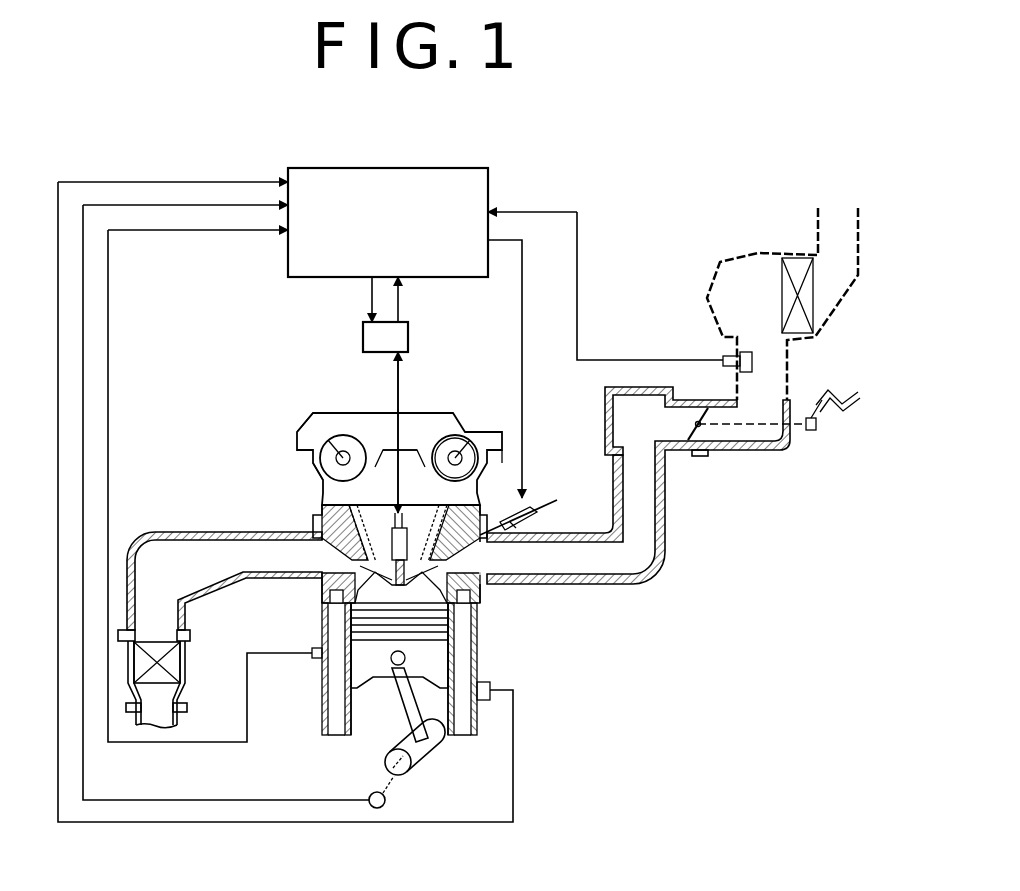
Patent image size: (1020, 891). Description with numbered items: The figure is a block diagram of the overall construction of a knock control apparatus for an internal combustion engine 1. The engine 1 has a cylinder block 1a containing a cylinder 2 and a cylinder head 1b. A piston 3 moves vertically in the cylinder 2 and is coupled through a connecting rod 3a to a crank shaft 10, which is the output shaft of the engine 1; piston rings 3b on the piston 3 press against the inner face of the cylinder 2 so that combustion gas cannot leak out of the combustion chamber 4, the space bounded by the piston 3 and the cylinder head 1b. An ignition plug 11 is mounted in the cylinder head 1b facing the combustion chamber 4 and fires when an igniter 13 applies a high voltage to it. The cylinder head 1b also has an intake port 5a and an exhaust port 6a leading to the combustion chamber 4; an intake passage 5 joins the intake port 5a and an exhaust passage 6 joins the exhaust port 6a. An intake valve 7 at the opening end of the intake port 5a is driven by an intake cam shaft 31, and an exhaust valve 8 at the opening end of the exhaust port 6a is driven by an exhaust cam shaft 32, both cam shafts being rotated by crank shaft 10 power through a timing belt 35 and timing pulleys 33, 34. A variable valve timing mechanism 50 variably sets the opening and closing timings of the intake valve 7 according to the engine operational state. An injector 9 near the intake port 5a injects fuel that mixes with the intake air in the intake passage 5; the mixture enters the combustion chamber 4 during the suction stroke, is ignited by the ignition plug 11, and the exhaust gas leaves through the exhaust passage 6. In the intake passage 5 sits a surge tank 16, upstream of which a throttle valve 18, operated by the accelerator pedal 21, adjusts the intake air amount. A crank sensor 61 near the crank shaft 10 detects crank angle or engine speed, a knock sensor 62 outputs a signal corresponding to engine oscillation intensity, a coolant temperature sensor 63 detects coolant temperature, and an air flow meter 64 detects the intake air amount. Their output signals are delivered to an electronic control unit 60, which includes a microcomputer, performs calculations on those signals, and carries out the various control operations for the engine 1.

The internal combustion engine 1 is at (492, 664).
The cylinder block 1a is at (322, 716).
The cylinder head 1b is at (312, 519).
The cylinder 2 is at (342, 740).
The piston 3 is at (396, 680).
The connecting rod 3a is at (412, 720).
The piston rings 3b is at (455, 619).
The combustion chamber 4 is at (345, 605).
The intake passage 5 is at (668, 532).
The intake port 5a is at (472, 548).
The exhaust passage 6 is at (242, 582).
The exhaust port 6a is at (332, 542).
The intake valve 7 is at (440, 574).
The exhaust valve 8 is at (345, 590).
The injector 9 is at (538, 508).
The crank shaft 10 is at (418, 756).
The ignition plug 11 is at (410, 515).
The igniter 13 is at (408, 340).
The surge tank 16 is at (614, 420).
The throttle valve 18 is at (712, 412).
The accelerator pedal 21 is at (818, 430).
The intake cam shaft 31 is at (500, 455).
The exhaust cam shaft 32 is at (380, 503).
The timing pulley 33 is at (470, 430).
The timing pulley 34 is at (343, 435).
The timing belt 35 is at (383, 416).
The variable valve timing mechanism 50 is at (452, 435).
The electronic control unit 60 is at (293, 277).
The crank sensor 61 is at (386, 803).
The knock sensor 62 is at (312, 658).
The coolant temperature sensor 63 is at (487, 700).
The air flow meter 64 is at (750, 352).